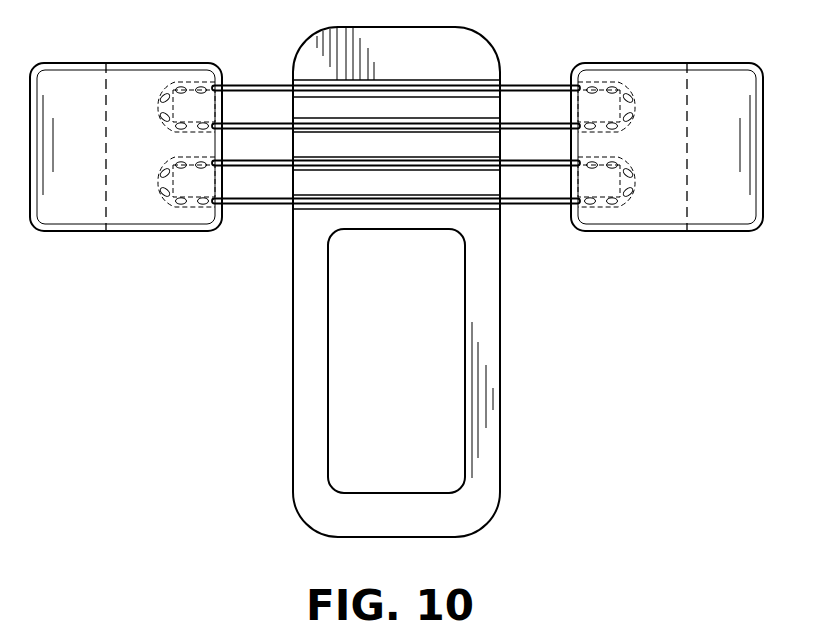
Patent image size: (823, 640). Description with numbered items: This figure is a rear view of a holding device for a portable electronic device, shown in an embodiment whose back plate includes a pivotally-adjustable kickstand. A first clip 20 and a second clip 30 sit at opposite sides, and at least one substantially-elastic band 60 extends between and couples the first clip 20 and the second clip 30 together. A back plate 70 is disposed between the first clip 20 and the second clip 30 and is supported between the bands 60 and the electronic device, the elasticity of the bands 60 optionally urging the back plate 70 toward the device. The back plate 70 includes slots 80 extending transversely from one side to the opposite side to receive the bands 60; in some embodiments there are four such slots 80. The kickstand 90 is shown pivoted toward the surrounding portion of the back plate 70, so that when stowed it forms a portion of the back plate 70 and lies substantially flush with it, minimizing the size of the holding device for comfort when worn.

The first clip 20 is at (57, 243).
The second clip 30 is at (727, 243).
The substantially-elastic band 60 is at (253, 84).
The back plate 70 is at (284, 377).
The slot 80 is at (300, 175).
The kickstand 90 is at (404, 448).